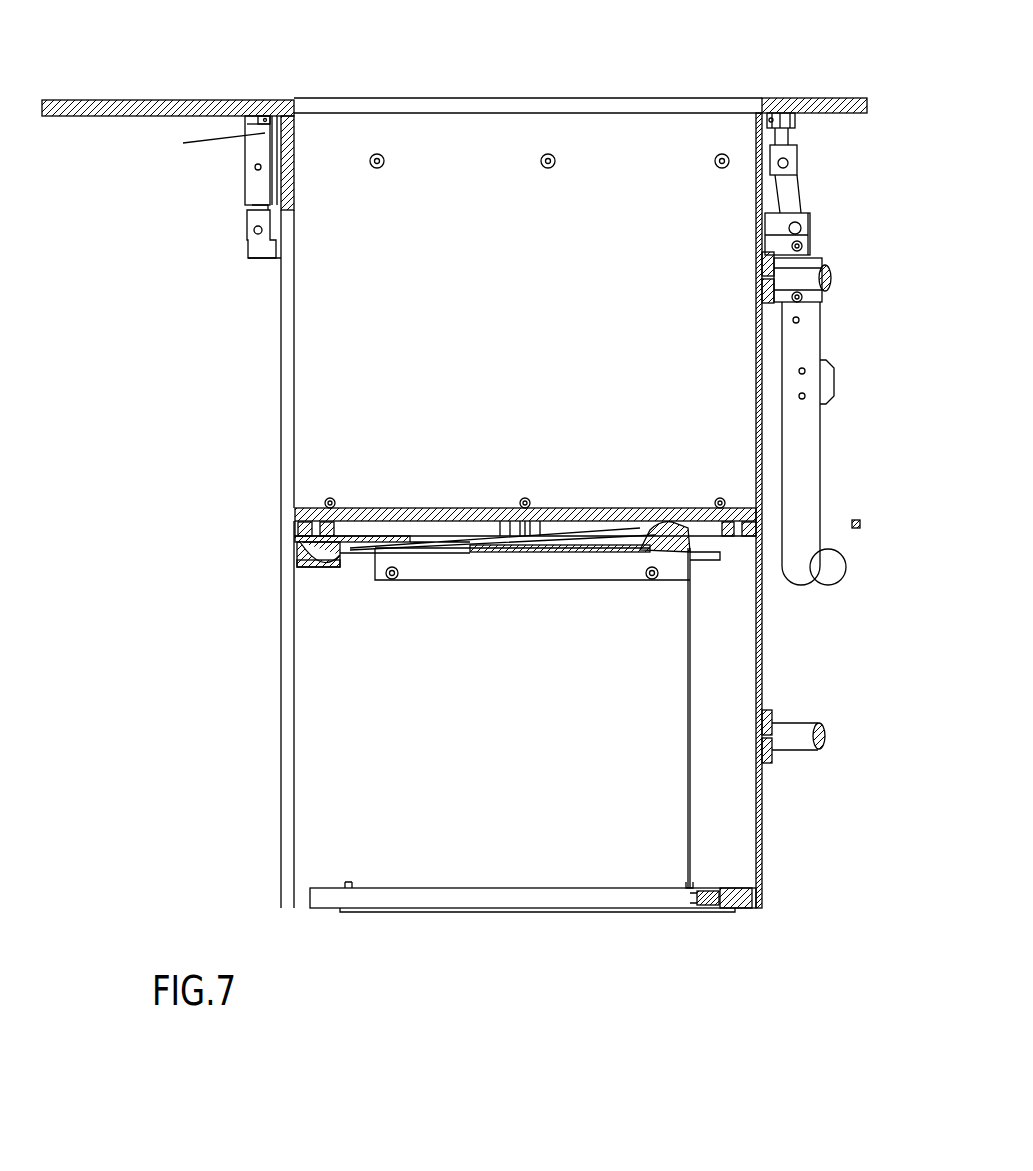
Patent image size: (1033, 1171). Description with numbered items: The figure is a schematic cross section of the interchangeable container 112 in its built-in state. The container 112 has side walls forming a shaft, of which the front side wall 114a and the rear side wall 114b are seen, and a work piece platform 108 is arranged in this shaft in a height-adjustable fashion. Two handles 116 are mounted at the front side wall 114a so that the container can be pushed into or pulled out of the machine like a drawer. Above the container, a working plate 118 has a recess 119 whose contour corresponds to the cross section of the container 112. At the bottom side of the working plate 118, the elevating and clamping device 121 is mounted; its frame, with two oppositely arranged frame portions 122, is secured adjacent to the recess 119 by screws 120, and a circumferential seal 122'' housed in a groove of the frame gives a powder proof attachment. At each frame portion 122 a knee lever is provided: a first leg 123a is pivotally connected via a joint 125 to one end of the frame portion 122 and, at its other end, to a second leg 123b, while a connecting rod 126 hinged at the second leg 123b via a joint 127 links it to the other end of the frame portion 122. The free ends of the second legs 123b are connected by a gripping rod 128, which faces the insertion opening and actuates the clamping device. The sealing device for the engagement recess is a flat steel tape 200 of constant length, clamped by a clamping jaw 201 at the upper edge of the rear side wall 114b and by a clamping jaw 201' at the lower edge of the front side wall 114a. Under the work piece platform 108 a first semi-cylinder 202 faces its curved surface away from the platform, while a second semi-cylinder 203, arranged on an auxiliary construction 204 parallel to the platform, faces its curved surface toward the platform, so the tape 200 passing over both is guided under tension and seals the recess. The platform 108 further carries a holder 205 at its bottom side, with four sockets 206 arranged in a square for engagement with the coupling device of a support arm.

The work piece platform 108 is at (397, 507).
The interchangeable container 112 is at (256, 704).
The front side wall 114a is at (763, 625).
The rear side wall 114b is at (294, 465).
The handle 116 is at (832, 262).
The working plate 118 is at (190, 100).
The recess 119 is at (300, 112).
The screw 120 is at (783, 100).
The elevating and clamping device 121 is at (822, 434).
The frame portion 122 is at (521, 136).
The circumferential seal 122'' is at (756, 72).
The first leg 123a is at (268, 256).
The second leg 123b is at (805, 481).
The joint 125 is at (255, 231).
The connecting rod 126 is at (790, 195).
The joint 127 is at (797, 150).
The gripping rod 128 is at (832, 567).
The flat tape 200 is at (183, 143).
The clamping jaw 201 is at (261, 75).
The clamping jaw 201' is at (729, 933).
The first semi-cylinder 202 is at (327, 568).
The second semi-cylinder 203 is at (672, 555).
The auxiliary construction 204 is at (600, 550).
The holder 205 is at (460, 568).
The socket 206 is at (392, 582).